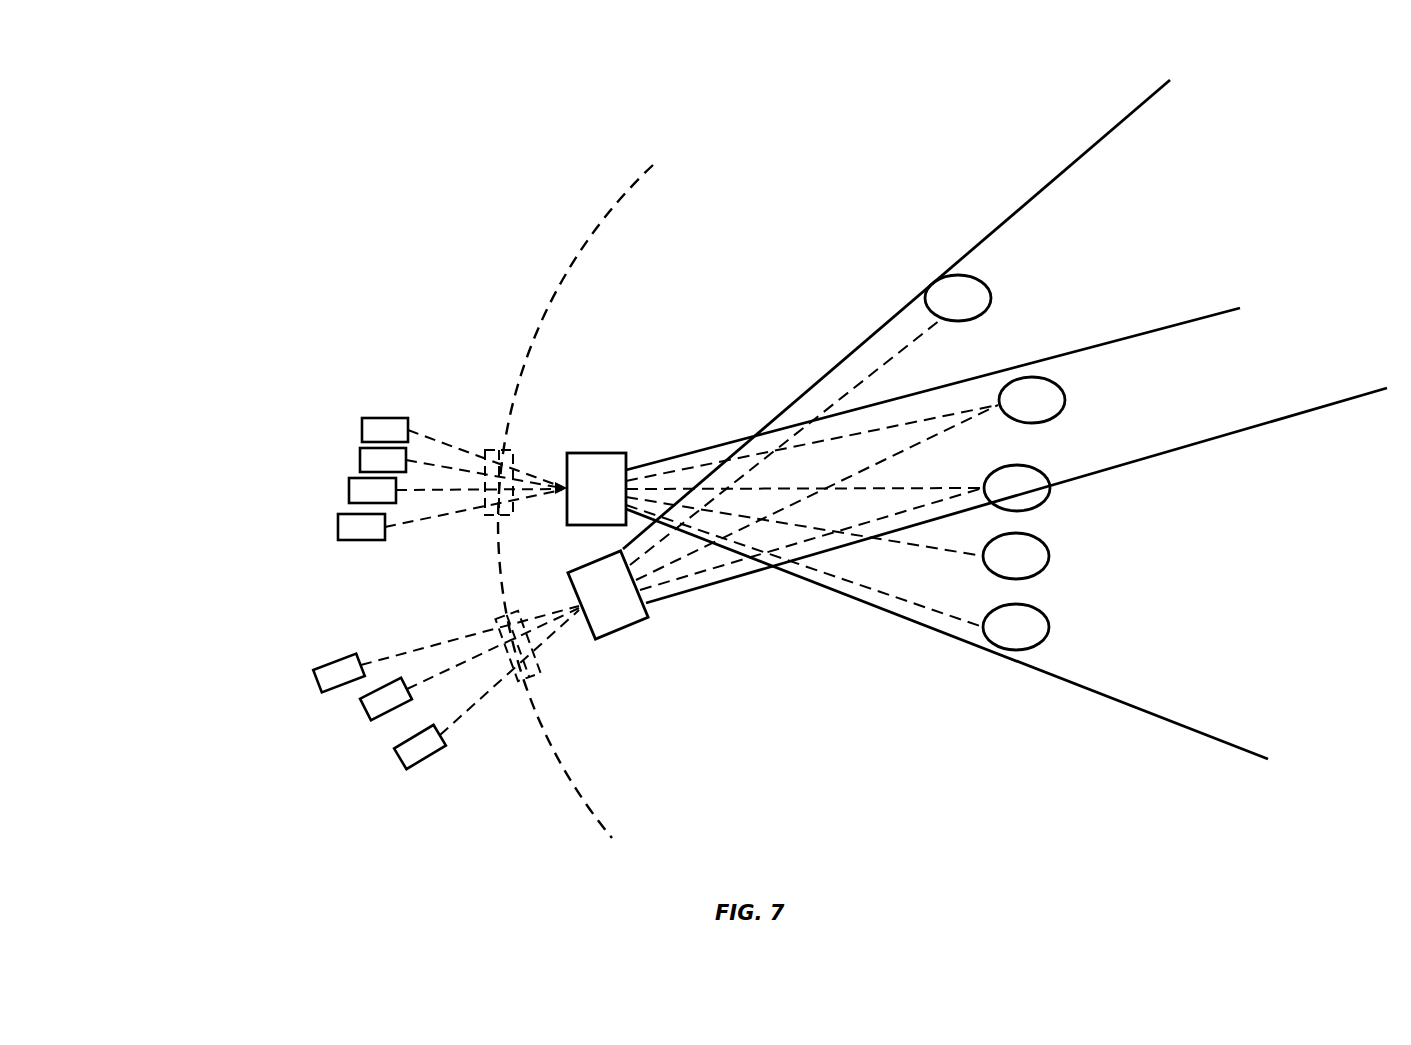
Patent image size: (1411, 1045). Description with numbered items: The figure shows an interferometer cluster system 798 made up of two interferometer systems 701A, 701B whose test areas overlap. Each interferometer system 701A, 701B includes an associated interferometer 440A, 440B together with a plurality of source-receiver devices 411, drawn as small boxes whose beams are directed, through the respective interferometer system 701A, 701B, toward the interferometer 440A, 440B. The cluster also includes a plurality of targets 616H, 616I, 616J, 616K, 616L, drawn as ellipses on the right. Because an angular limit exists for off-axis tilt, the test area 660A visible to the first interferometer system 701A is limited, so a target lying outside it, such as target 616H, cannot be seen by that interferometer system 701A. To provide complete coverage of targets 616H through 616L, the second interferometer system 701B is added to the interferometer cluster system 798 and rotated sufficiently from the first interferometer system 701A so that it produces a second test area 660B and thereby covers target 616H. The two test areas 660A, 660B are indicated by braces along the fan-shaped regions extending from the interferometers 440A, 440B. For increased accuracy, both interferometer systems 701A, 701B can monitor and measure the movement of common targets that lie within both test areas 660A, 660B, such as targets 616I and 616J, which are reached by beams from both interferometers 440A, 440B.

The interferometer cluster system 798 is at (200, 634).
The source-receiver device 411 is at (370, 418).
The interferometer system 701A is at (558, 430).
The interferometer system 701B is at (592, 654).
The interferometer 440A is at (613, 452).
The interferometer 440B is at (630, 627).
The test area 660A is at (1250, 305).
The test area 660B is at (1185, 75).
The target 616H is at (986, 283).
The target 616I is at (1065, 403).
The target 616J is at (1050, 489).
The target 616K is at (1049, 558).
The target 616L is at (1049, 629).